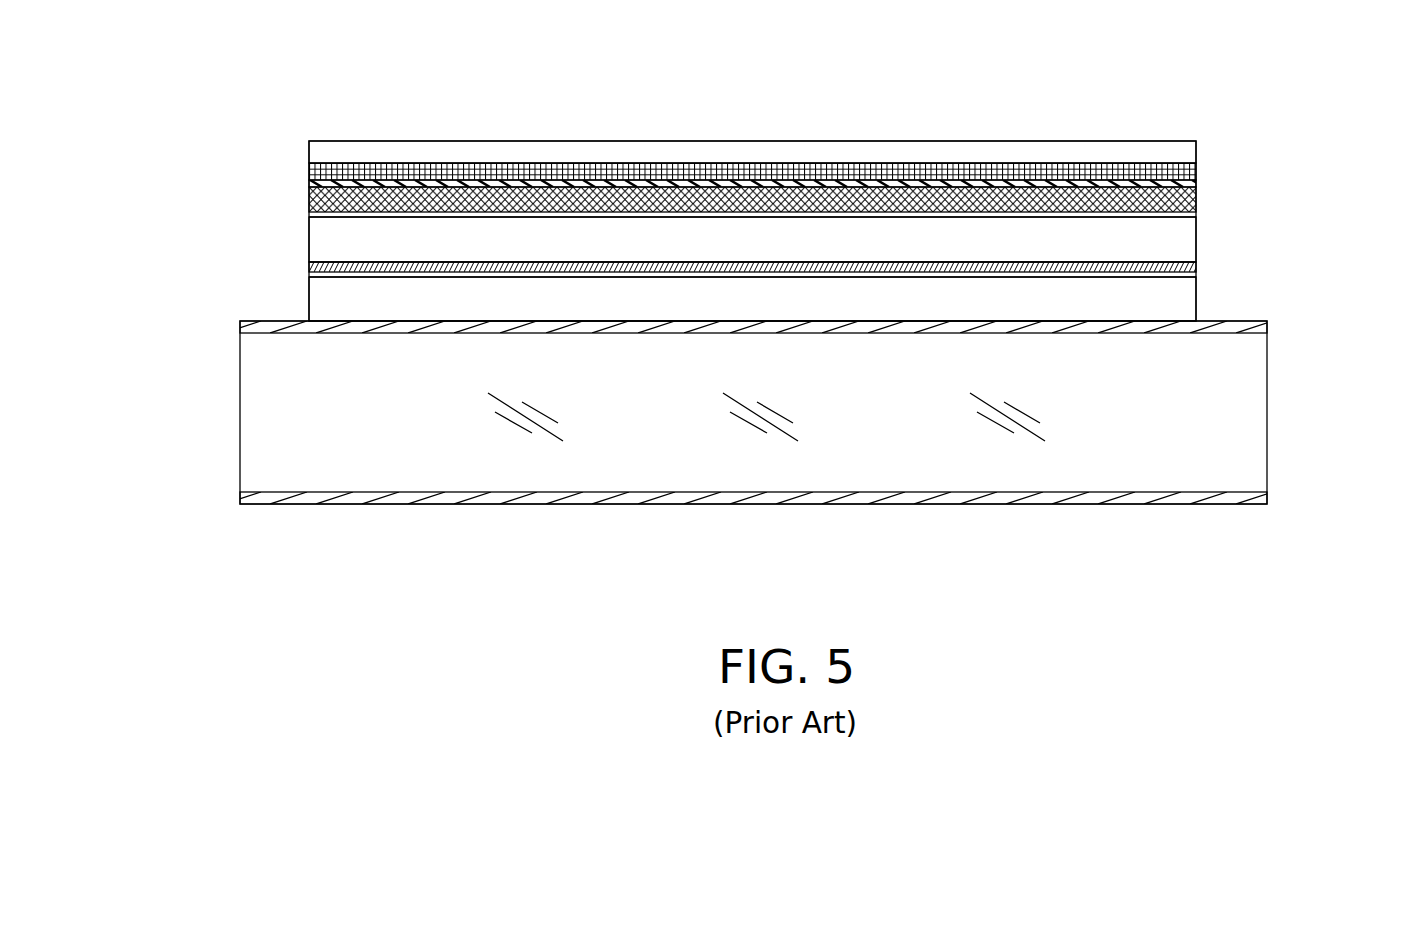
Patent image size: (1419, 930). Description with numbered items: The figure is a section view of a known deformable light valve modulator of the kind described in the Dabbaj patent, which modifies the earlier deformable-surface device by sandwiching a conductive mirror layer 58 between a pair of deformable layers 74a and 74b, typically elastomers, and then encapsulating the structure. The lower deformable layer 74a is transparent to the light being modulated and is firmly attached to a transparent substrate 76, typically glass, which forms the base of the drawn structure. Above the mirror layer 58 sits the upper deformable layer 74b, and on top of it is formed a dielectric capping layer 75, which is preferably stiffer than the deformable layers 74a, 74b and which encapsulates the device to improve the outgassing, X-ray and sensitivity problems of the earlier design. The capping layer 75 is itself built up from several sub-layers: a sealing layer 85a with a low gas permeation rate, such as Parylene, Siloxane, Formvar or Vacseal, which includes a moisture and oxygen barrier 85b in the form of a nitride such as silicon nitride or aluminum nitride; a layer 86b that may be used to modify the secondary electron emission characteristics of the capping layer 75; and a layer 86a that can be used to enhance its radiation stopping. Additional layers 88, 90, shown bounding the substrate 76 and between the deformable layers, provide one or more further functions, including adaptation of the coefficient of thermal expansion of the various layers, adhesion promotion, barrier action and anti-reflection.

The mirror layer 58 is at (287, 270).
The deformable layer 74a is at (287, 303).
The deformable layer 74b is at (287, 240).
The capping layer 75 is at (298, 140).
The transparent substrate 76 is at (375, 438).
The sealing layer 85a is at (1212, 200).
The moisture and oxygen barrier 85b is at (1212, 181).
The radiation stopping layer 86a is at (991, 119).
The secondary electron emission layer 86b is at (1212, 163).
The additional layer 88 is at (225, 325).
The additional layer 90 is at (1196, 217).